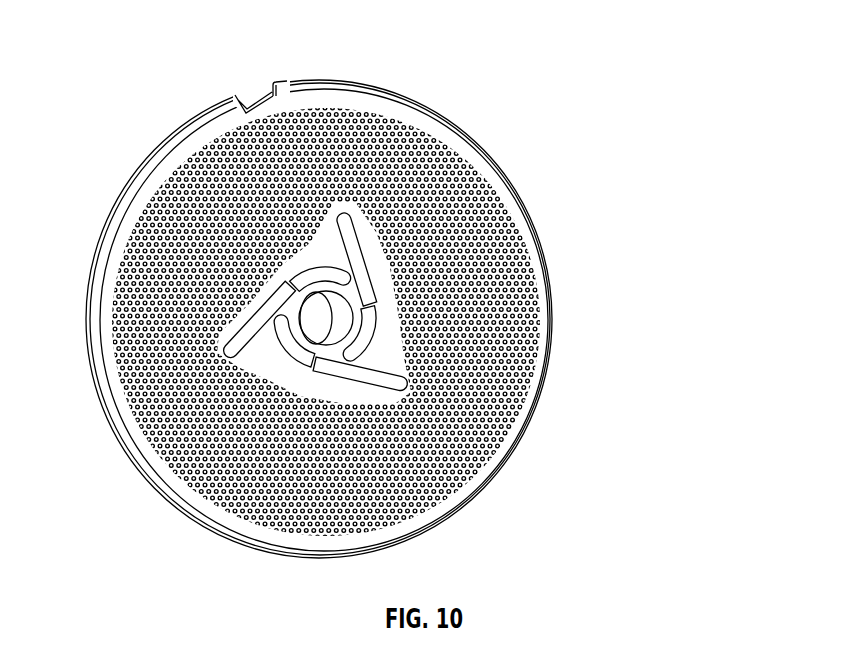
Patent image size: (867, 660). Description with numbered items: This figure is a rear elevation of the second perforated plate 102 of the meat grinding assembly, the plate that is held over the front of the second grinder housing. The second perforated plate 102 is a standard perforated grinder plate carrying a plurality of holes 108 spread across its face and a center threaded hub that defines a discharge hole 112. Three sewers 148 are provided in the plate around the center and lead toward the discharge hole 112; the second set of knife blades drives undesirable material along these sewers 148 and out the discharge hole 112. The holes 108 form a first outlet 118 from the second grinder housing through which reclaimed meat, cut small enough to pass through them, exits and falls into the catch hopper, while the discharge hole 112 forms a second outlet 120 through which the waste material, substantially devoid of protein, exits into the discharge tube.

The second perforated plate 102 is at (557, 203).
The holes 108 is at (447, 384).
The discharge hole 112 is at (347, 307).
The first outlet 118 is at (297, 132).
The second outlet 120 is at (335, 323).
The sewers 148 is at (243, 323).